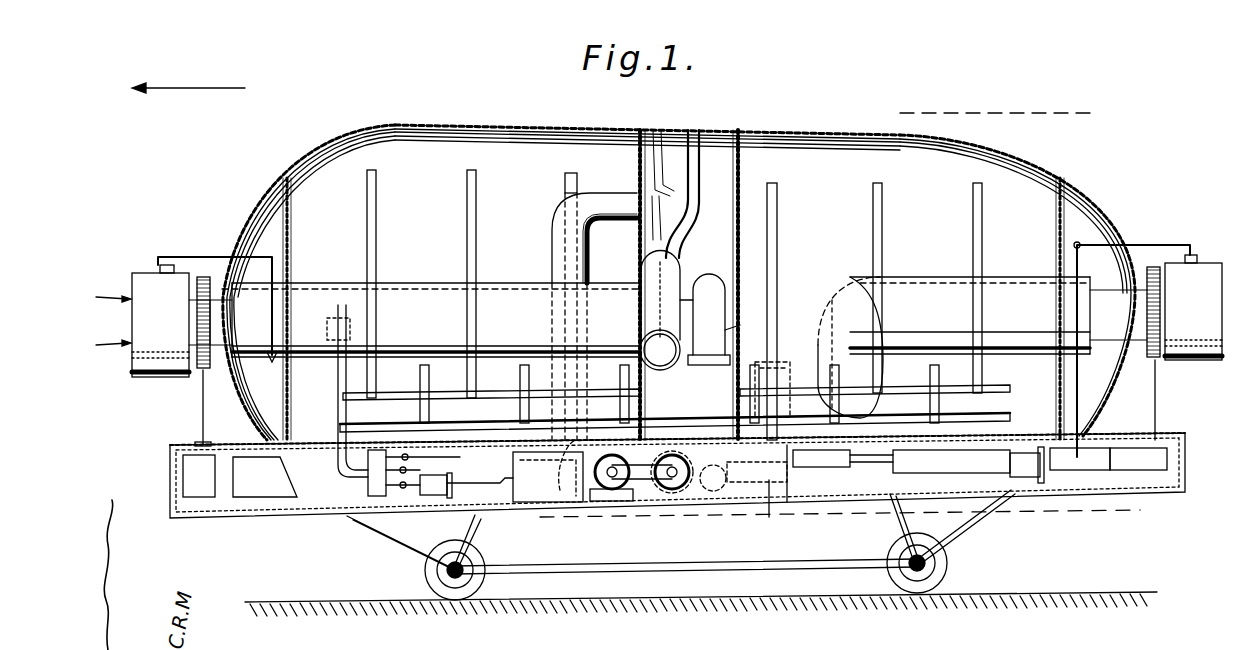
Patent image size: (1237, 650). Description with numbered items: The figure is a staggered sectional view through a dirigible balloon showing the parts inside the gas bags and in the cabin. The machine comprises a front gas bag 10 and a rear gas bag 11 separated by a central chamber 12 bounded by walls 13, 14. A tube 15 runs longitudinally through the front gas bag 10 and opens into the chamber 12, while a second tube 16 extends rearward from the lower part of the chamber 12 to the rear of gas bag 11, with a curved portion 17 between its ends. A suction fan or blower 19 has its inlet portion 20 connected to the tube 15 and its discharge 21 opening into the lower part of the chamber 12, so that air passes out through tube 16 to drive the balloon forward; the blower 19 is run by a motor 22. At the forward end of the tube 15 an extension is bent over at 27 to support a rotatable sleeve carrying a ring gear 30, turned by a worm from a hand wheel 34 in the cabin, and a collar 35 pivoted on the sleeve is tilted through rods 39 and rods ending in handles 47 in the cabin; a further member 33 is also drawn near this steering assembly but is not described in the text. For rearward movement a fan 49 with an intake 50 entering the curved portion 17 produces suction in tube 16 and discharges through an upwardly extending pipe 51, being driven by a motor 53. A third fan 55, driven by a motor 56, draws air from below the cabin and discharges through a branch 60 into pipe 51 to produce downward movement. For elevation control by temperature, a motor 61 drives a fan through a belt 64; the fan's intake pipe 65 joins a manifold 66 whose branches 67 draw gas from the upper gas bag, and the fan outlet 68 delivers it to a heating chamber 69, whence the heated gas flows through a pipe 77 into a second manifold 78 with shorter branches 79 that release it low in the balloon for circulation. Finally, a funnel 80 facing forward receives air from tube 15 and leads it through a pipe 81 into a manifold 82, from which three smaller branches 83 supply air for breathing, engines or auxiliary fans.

The front gas bag 10 is at (455, 128).
The rear gas bag 11 is at (890, 155).
The central chamber 12 is at (728, 262).
The wall 13 is at (615, 148).
The wall 14 is at (737, 175).
The tube 15 is at (406, 282).
The second tube 16 is at (905, 280).
The curved portion 17 is at (835, 312).
The suction producing fan, pump or blower 19 is at (663, 145).
The inlet portion 20 is at (636, 300).
The discharge 21 is at (733, 333).
The motor 22 is at (712, 290).
The bent-over portion 27 is at (275, 512).
The ring gear 30 is at (197, 334).
The support rod 33 is at (203, 395).
The hand wheel 34 is at (182, 466).
The collar 35 is at (138, 323).
The rods 39 is at (183, 256).
The handles 47 is at (671, 472).
The fan or blower 49 is at (673, 490).
The intake 50 is at (785, 390).
The upwardly extending pipe 51 is at (695, 222).
The motor 53 is at (745, 485).
The third fan 55 is at (605, 495).
The motor 56 is at (512, 468).
The branch 60 is at (580, 210).
The motor 61 is at (583, 462).
The belt 64 is at (650, 492).
The intake pipe 65 is at (443, 496).
The manifold 66 is at (470, 400).
The branches 67 is at (466, 186).
The fan outlet 68 is at (705, 495).
The heating chamber 69 is at (771, 505).
The pipe 77 is at (843, 460).
The second manifold 78 is at (372, 421).
The branches 79 is at (431, 380).
The funnel 80 is at (345, 330).
The pipe 81 is at (337, 408).
The manifold 82 is at (366, 462).
The branches 83 is at (380, 480).